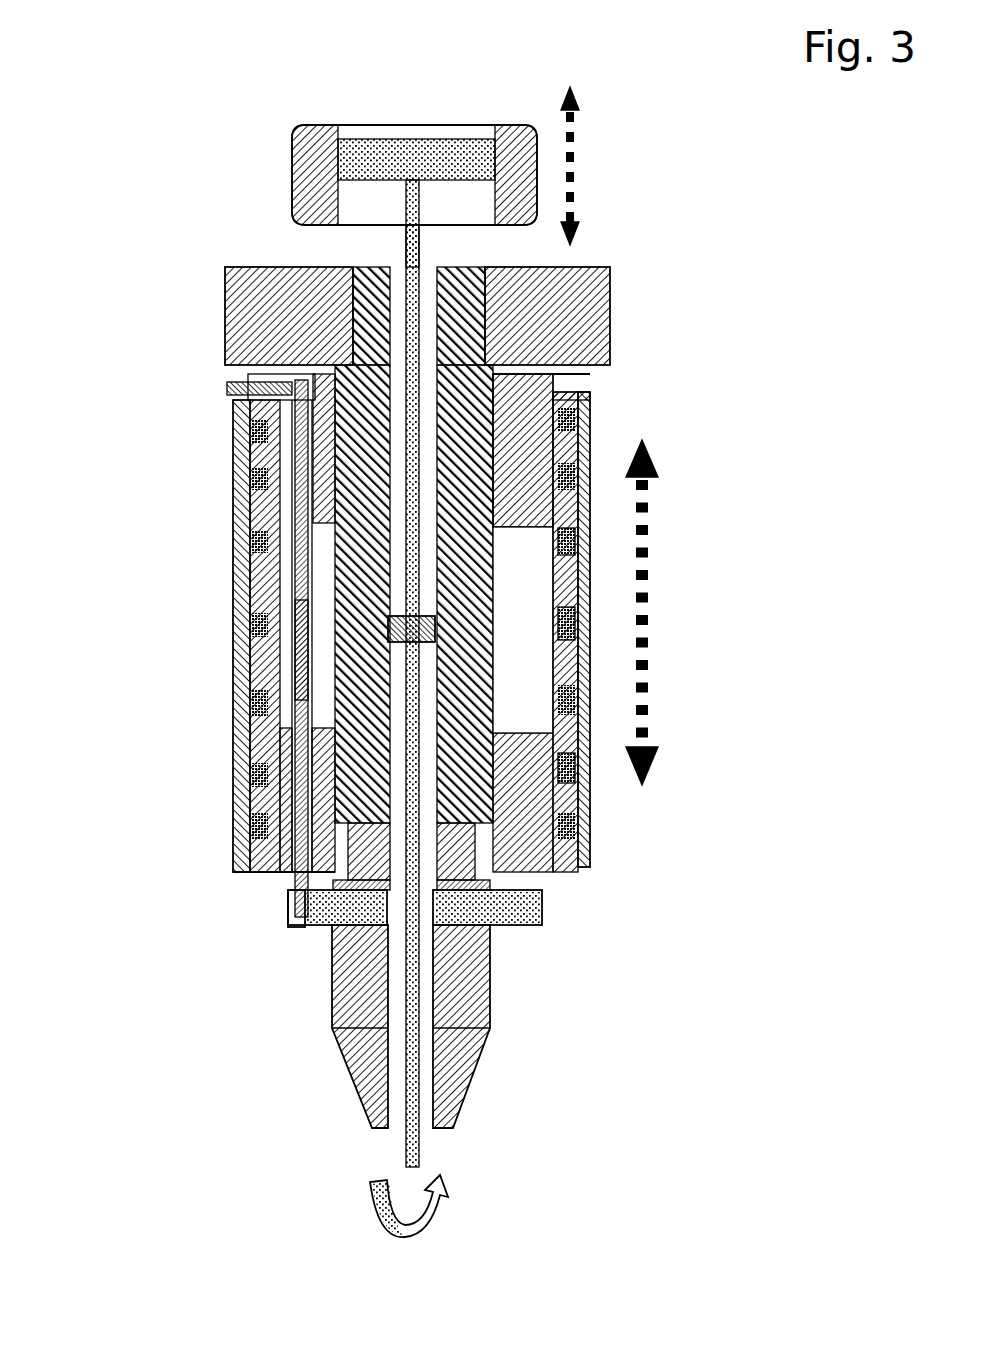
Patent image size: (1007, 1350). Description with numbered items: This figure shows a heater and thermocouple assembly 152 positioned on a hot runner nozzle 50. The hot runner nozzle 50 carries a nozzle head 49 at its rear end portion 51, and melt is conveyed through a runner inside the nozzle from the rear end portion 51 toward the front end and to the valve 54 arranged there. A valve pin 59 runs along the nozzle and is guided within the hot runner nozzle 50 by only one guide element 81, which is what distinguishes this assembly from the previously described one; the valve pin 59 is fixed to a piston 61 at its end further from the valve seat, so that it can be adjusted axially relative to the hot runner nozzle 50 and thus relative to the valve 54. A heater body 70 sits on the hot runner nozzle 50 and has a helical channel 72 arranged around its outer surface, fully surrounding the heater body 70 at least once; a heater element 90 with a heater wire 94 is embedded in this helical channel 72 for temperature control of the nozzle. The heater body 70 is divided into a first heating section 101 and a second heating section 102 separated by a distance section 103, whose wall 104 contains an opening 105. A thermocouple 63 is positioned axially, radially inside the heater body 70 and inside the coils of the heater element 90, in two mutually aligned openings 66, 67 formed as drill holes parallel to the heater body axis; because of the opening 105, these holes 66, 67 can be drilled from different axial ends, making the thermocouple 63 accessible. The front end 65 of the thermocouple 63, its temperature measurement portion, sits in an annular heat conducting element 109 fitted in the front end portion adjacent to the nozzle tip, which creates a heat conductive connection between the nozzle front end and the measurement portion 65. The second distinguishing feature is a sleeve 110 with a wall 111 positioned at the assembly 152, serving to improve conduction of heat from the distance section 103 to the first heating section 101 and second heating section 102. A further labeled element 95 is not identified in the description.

The nozzle head 49 is at (257, 317).
The hot runner nozzle 50 is at (463, 325).
The rear end portion 51 is at (477, 357).
The valve 54 is at (378, 1148).
The valve pin 59 is at (408, 1090).
The piston 61 is at (483, 158).
The thermocouple 63 is at (293, 665).
The front end of the thermocouple 65 is at (292, 908).
The opening 66 is at (293, 497).
The opening 67 is at (293, 803).
The heater body 70 is at (577, 382).
The helical channel 72 is at (580, 797).
The guide element 81 is at (435, 632).
The heater element 90 is at (540, 833).
The heater wire 94 is at (577, 422).
The cap 95 is at (577, 412).
The first heating section 101 is at (560, 870).
The second heating section 102 is at (522, 503).
The distance section 103 is at (578, 583).
The wall 104 is at (578, 642).
The opening 105 is at (515, 695).
The heat conducting element 109 is at (538, 920).
The sleeve 110 is at (583, 455).
The wall 111 is at (580, 770).
The heater and thermocouple assembly 152 is at (197, 417).